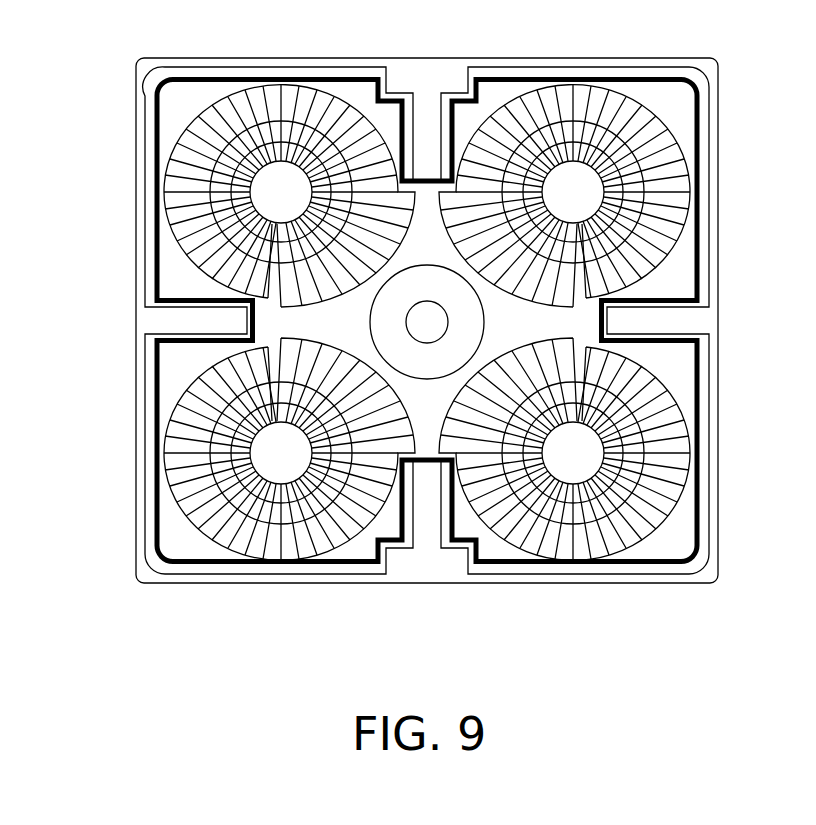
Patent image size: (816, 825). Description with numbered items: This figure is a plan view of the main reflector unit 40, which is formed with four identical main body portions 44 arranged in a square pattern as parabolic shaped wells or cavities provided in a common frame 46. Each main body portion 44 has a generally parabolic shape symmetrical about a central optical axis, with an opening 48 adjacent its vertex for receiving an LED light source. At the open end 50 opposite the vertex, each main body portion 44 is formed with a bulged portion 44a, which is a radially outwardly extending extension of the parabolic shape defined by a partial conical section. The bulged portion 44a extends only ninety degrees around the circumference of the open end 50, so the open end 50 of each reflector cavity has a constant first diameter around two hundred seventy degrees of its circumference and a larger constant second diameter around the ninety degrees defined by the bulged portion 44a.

The main reflector unit 40 is at (382, 357).
The main body portion 44 is at (202, 383).
The bulged portion 44a is at (303, 207).
The common frame 46 is at (146, 571).
The opening 48 is at (257, 450).
The open end 50 is at (290, 560).